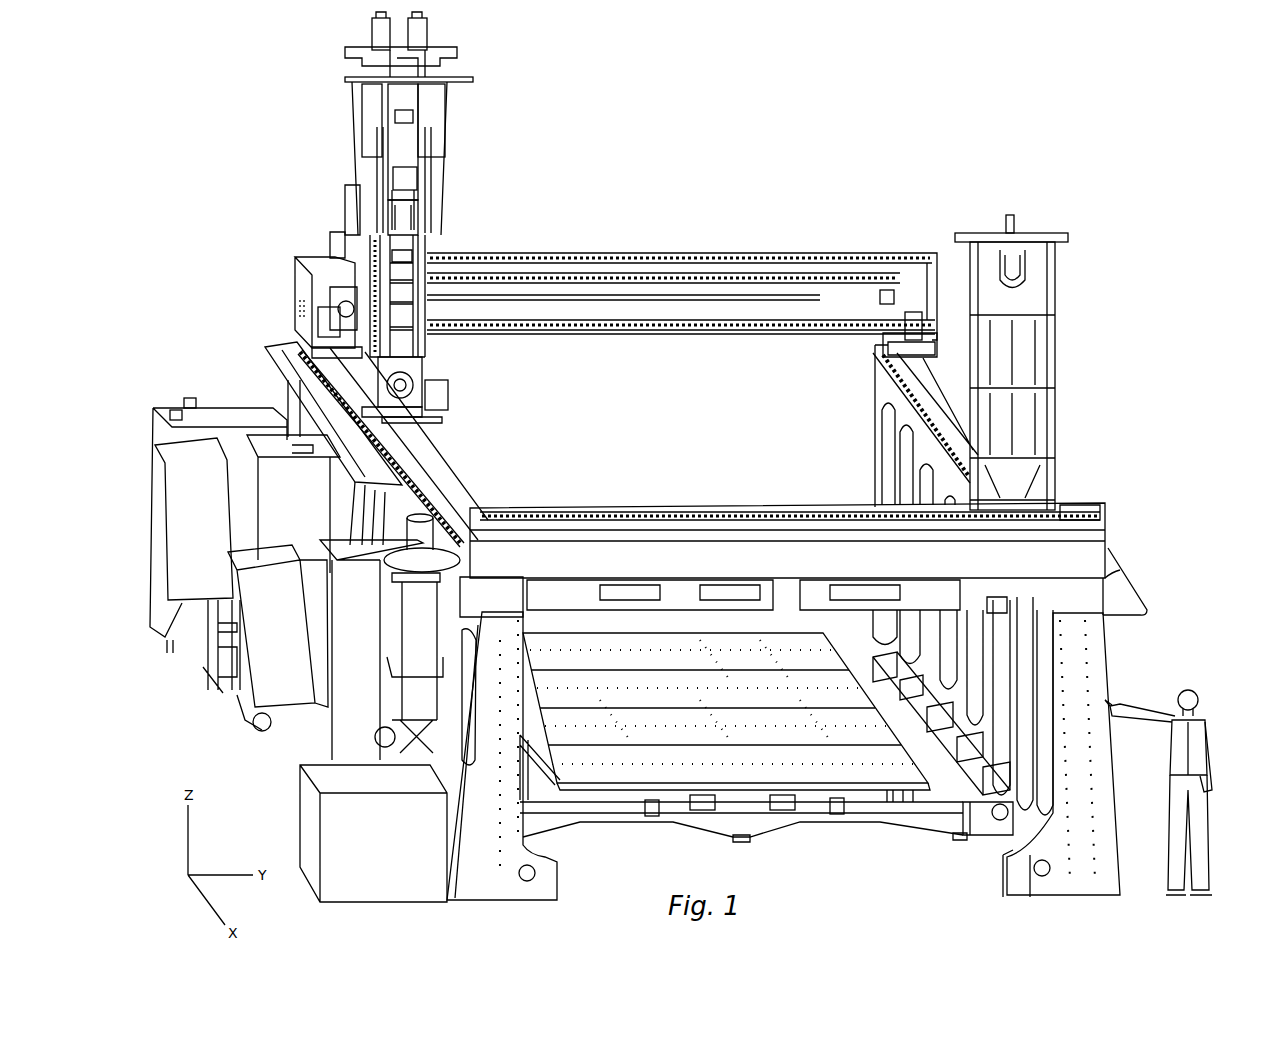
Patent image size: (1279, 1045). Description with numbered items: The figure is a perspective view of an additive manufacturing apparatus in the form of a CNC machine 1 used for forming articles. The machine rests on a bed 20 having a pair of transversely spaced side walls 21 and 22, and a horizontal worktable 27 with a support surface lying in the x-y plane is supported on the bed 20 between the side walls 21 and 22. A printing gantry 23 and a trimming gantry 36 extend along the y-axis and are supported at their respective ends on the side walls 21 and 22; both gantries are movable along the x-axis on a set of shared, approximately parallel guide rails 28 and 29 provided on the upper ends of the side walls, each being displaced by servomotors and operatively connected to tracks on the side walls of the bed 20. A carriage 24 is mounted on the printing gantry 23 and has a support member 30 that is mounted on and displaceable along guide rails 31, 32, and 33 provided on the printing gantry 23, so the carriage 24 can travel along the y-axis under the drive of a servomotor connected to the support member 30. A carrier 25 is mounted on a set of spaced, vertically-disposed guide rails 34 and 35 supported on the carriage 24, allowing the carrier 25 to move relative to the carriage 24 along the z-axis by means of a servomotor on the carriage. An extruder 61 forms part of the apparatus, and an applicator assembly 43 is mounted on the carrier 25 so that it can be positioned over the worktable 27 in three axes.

The CNC machine 1 is at (1047, 142).
The bed 20 is at (675, 815).
The side wall 21 is at (515, 740).
The side wall 22 is at (1082, 760).
The printing gantry 23 is at (862, 255).
The carriage 24 is at (349, 210).
The carrier 25 is at (449, 146).
The horizontal worktable 27 is at (693, 715).
The guide rail 28 is at (435, 487).
The guide rail 29 is at (900, 380).
The support member 30 is at (333, 232).
The guide rail 31 is at (722, 250).
The guide rail 32 is at (648, 270).
The guide rail 33 is at (680, 322).
The guide rail 34 is at (357, 190).
The guide rail 35 is at (425, 340).
The trimming gantry 36 is at (1062, 496).
The applicator assembly 43 is at (410, 419).
The extruder 61 is at (432, 229).